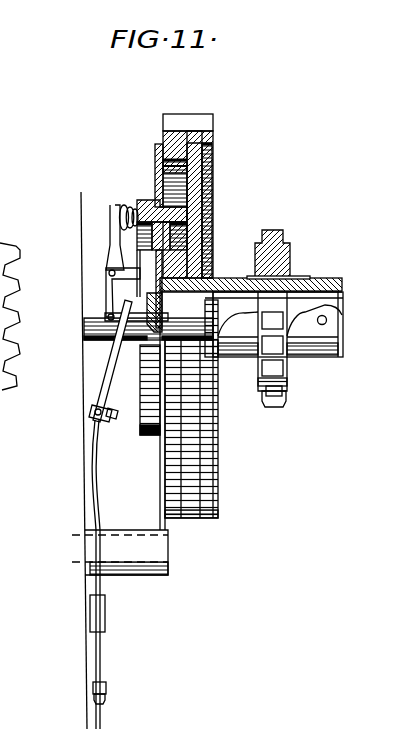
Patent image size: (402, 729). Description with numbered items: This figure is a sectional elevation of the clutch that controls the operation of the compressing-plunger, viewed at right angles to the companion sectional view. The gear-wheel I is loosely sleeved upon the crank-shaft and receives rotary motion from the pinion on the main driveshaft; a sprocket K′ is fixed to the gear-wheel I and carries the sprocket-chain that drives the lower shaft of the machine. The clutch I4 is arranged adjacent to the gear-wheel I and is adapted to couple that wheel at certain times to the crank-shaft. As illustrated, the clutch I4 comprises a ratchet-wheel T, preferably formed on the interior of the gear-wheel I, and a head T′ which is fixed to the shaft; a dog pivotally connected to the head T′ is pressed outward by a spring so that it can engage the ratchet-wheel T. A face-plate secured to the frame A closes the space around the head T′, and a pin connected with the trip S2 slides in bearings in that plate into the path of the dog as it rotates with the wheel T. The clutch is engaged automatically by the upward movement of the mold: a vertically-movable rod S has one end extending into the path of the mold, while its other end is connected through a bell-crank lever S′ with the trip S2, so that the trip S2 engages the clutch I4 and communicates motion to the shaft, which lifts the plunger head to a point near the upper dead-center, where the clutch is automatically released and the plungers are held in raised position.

The gear-wheel I is at (198, 123).
The clutch I4 is at (115, 222).
The ratchet-wheel T is at (156, 160).
The head T′ is at (137, 203).
The sprocket K′ is at (283, 244).
The vertically-movable rod S is at (108, 498).
The bell-crank lever S′ is at (118, 343).
The trip S2 is at (108, 281).
The frame A is at (84, 467).